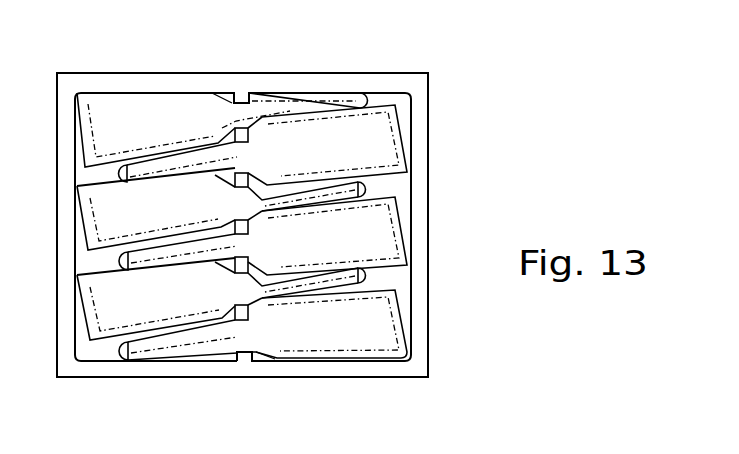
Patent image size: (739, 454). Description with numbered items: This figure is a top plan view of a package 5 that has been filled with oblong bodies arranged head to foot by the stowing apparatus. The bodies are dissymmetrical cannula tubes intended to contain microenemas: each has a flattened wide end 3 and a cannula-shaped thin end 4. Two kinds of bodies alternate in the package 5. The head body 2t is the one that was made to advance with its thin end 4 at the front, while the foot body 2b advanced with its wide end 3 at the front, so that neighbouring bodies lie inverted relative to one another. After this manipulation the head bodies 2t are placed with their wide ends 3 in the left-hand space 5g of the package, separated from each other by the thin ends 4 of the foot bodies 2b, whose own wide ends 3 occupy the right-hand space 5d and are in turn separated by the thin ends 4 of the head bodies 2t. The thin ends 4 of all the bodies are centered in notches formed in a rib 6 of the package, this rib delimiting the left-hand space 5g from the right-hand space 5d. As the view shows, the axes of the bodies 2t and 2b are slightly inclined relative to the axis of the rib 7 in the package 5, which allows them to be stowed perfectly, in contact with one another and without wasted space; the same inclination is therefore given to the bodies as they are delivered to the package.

The head body 2t is at (128, 117).
The foot body 2b is at (373, 150).
The wide end 3 is at (103, 128).
The thin end 4 is at (337, 100).
The package 5 is at (301, 82).
The right-hand space 5d is at (398, 272).
The left-hand space 5g is at (93, 356).
The rib 6 is at (250, 286).
The rib 7 is at (245, 356).